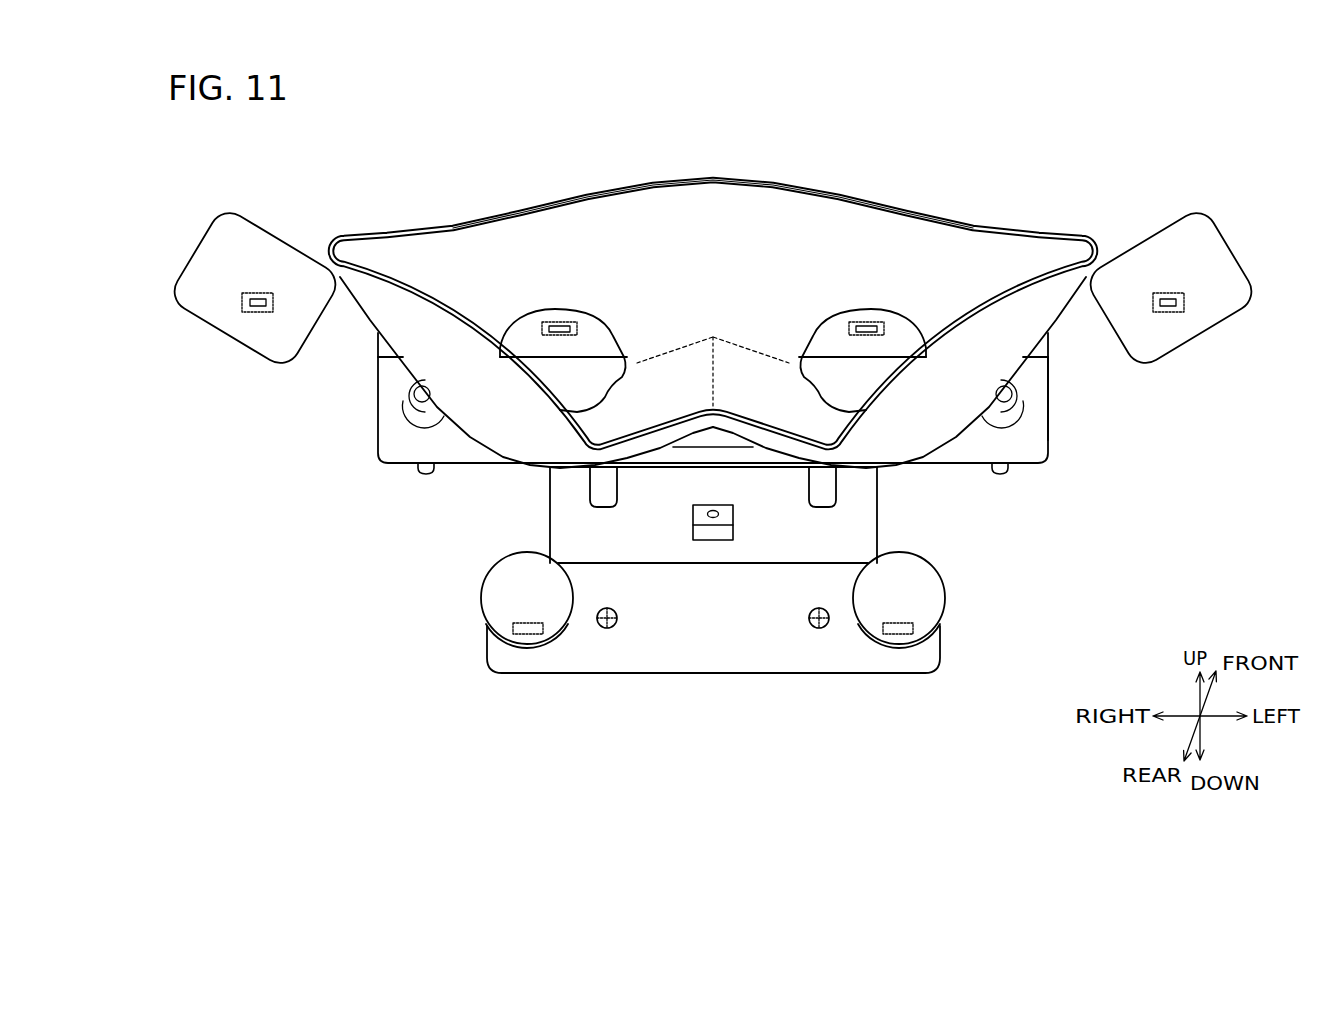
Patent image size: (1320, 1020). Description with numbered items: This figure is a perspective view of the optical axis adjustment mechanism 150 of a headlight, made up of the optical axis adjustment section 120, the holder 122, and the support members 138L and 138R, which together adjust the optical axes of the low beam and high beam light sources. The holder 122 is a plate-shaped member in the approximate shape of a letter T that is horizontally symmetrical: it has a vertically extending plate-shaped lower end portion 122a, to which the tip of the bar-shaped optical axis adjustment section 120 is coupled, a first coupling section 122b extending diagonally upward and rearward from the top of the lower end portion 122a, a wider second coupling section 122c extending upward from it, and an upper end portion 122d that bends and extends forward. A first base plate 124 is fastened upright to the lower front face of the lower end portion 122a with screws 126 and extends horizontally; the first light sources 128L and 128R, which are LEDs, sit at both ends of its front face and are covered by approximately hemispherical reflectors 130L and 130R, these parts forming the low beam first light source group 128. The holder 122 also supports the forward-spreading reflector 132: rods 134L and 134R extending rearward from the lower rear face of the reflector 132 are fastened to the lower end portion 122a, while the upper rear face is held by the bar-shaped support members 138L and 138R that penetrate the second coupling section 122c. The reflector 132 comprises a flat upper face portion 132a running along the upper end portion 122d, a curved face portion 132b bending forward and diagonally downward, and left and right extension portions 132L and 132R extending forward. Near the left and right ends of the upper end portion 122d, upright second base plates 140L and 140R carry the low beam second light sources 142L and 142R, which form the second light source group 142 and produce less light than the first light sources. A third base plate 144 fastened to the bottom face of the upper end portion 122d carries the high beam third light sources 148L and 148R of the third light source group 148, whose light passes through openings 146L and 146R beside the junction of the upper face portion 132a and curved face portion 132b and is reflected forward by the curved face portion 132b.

The optical axis adjustment section 120 is at (713, 542).
The holder 122 is at (370, 433).
The lower end portion 122a is at (878, 520).
The first coupling section 122b is at (663, 468).
The second coupling section 122c is at (1036, 418).
The upper end portion 122d is at (1050, 343).
The first base plate 124 is at (714, 637).
The screws 126 is at (607, 632).
The first light source group 128 is at (487, 632).
The first light source 128R is at (531, 647).
The first light source 128L is at (893, 648).
The reflector 130R is at (508, 590).
The reflector 130L is at (918, 590).
The reflector 132 is at (768, 176).
The upper face portion 132a is at (706, 207).
The curved face portion 132b is at (747, 358).
The right extension portion 132R is at (382, 302).
The left extension portion 132L is at (977, 330).
The rod 134R is at (590, 490).
The rod 134L is at (836, 490).
The support member 138R is at (415, 470).
The support member 138L is at (1011, 470).
The second base plate 140R is at (262, 240).
The second base plate 140L is at (1165, 240).
The second light source group 142 is at (220, 270).
The second light source 142R is at (242, 302).
The second light source 142L is at (1185, 303).
The third base plate 144 is at (520, 337).
The opening 146R is at (600, 383).
The opening 146L is at (826, 383).
The third light source group 148 is at (611, 320).
The third light source 148R is at (556, 322).
The third light source 148L is at (862, 322).
The optical axis adjustment mechanism 150 is at (410, 512).